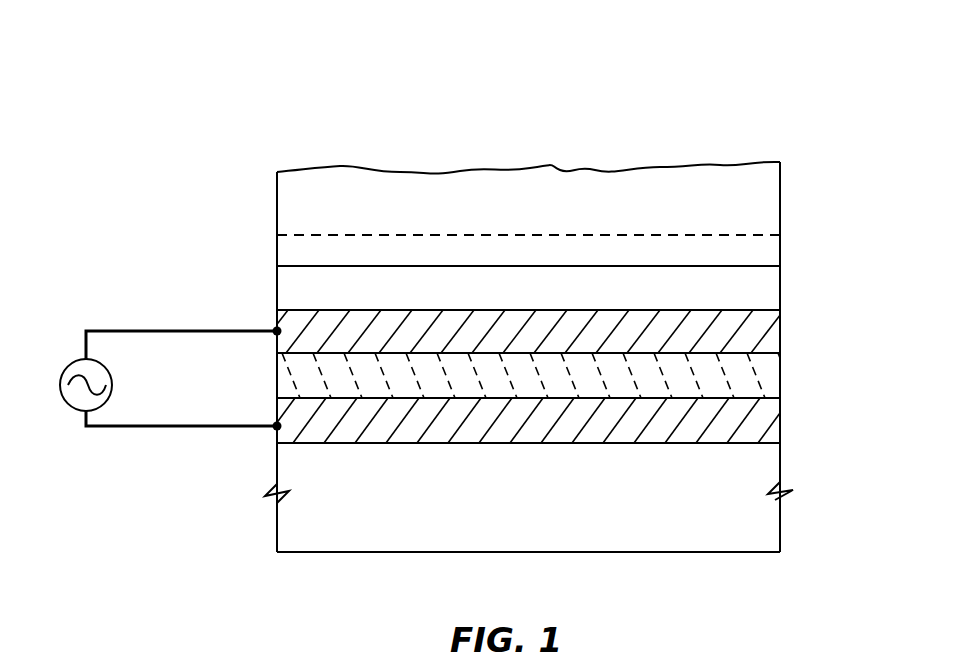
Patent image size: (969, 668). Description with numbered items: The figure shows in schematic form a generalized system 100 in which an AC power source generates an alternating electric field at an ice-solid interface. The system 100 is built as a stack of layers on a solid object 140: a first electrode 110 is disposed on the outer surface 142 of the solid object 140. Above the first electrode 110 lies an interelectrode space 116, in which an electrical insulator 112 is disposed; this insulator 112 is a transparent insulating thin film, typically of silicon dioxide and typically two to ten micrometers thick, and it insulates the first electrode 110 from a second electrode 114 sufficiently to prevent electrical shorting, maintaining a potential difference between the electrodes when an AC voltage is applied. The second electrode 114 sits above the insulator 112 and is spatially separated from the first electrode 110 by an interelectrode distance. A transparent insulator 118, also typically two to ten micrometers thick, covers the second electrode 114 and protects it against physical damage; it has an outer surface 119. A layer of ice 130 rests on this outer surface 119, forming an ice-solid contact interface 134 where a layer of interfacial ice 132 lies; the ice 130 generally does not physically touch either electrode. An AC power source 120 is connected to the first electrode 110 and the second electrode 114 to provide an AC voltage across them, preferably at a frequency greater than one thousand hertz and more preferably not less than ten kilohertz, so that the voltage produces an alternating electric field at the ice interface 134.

The system 100 is at (330, 55).
The ice 130 is at (731, 176).
The interfacial ice 132 is at (762, 250).
The ice-solid contact interface 134 is at (260, 267).
The outer surface 119 is at (303, 266).
The insulator 118 is at (765, 285).
The second electrode 114 is at (763, 315).
The interelectrode space 116 is at (285, 385).
The electrical insulator 112 is at (760, 366).
The first electrode 110 is at (762, 410).
The outer surface 142 is at (752, 444).
The solid object 140 is at (540, 516).
The AC power source 120 is at (60, 397).